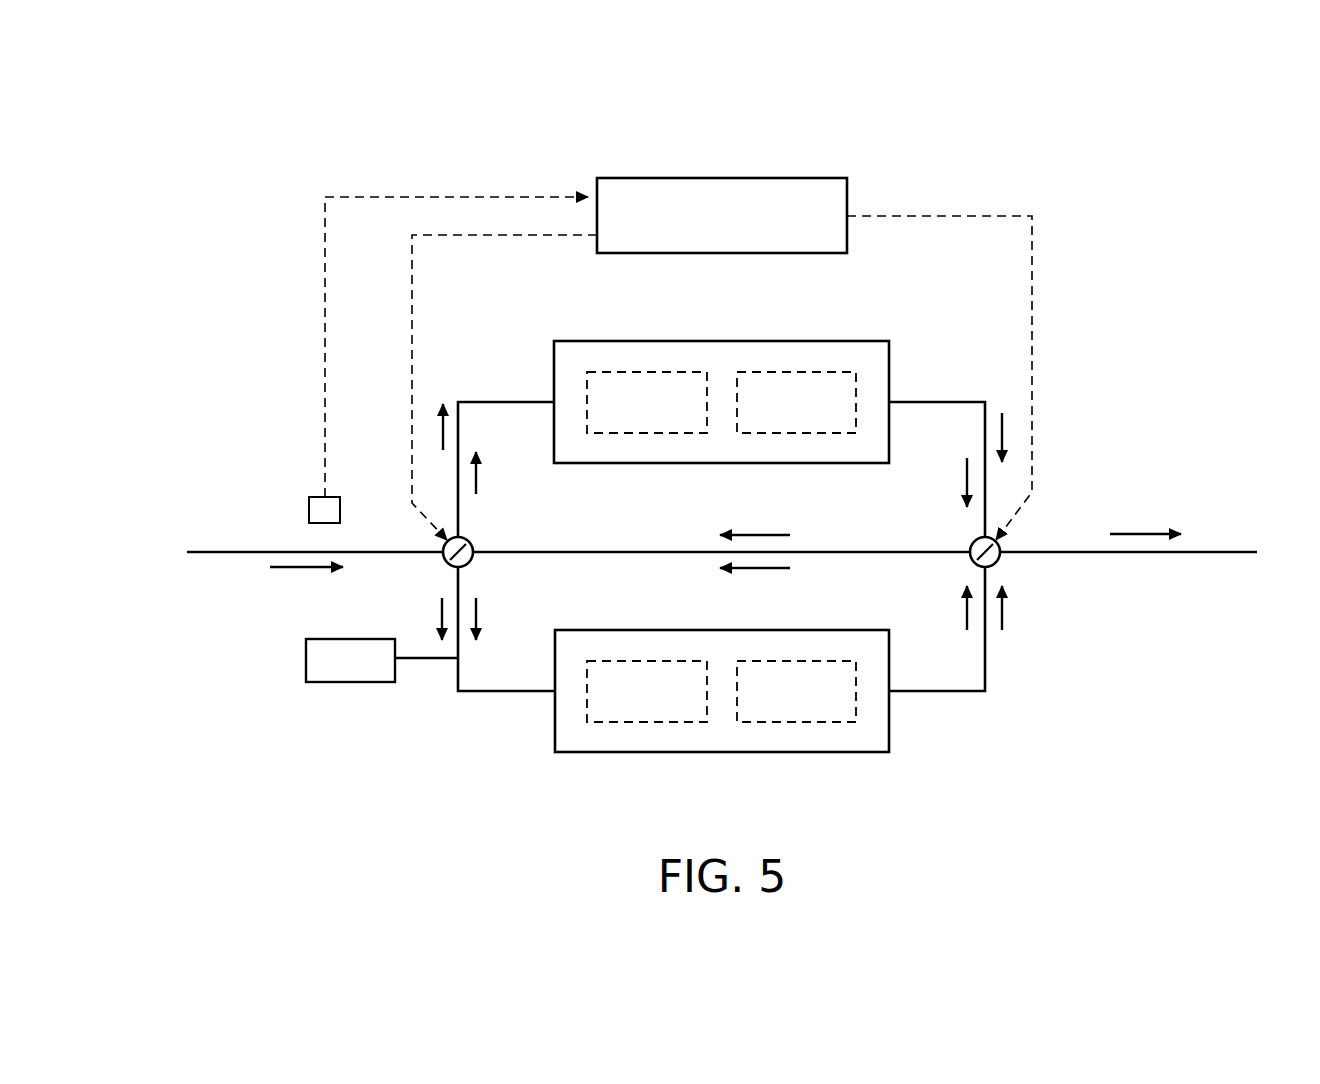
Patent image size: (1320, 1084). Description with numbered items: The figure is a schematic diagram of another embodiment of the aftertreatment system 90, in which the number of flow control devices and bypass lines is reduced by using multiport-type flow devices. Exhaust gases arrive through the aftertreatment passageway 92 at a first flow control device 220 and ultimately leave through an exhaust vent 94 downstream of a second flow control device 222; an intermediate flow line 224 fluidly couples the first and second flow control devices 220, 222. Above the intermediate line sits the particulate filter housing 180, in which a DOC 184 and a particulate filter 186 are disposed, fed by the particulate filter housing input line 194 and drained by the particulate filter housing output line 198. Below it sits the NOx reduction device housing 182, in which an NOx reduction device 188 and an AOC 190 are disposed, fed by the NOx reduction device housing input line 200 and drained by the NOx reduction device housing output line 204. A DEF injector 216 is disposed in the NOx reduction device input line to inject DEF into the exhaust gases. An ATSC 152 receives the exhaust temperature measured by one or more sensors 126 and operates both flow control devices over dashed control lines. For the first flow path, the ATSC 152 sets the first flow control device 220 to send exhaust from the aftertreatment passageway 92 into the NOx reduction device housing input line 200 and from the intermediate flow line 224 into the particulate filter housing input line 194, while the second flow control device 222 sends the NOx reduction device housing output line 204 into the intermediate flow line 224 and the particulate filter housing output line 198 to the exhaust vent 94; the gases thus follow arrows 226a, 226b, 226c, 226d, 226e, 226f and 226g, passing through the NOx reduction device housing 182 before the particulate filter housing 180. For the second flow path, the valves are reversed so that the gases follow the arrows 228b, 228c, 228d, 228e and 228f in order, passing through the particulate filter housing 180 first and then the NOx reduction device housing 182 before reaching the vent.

The aftertreatment system 90 is at (1080, 142).
The aftertreatment passageway 92 is at (197, 551).
The exhaust vent 94 is at (1213, 553).
The sensors 126 is at (308, 508).
The ATSC 152 is at (722, 177).
The particulate filter housing 180 is at (857, 340).
The NOx reduction device housing 182 is at (727, 753).
The DOC 184 is at (650, 371).
The particulate filter 186 is at (800, 371).
The NOx reduction device 188 is at (650, 723).
The AOC 190 is at (800, 723).
The particulate filter housing input line 194 is at (494, 401).
The particulate filter housing output line 198 is at (939, 401).
The NOx reduction device housing input line 200 is at (482, 693).
The NOx reduction device housing output line 204 is at (937, 692).
The DEF injector 216 is at (306, 660).
The first flow control device 220 is at (470, 543).
The second flow control device 222 is at (997, 562).
The intermediate flow line 224 is at (650, 551).
The first flow path arrow 226a is at (296, 574).
The first flow path arrow 226b is at (440, 606).
The first flow path arrow 226c is at (1004, 617).
The first flow path arrow 226d is at (760, 534).
The first flow path arrow 226e is at (440, 430).
The first flow path arrow 226f is at (1005, 437).
The first flow path arrow 226g is at (1145, 529).
The second flow path arrow 228b is at (478, 480).
The second flow path arrow 228c is at (965, 484).
The second flow path arrow 228d is at (760, 569).
The second flow path arrow 228e is at (478, 612).
The second flow path arrow 228f is at (965, 617).